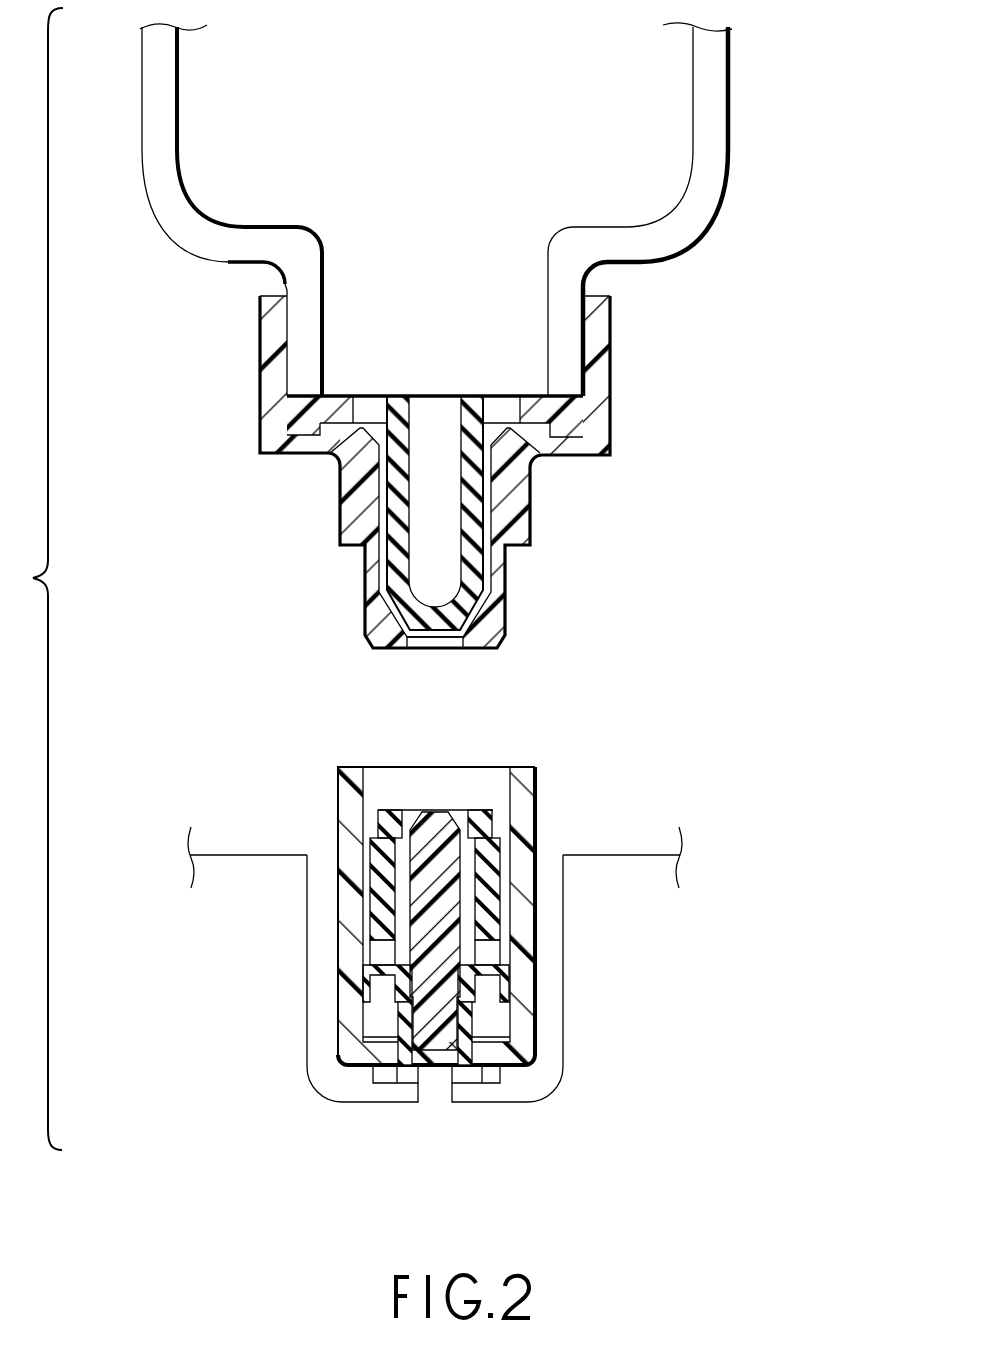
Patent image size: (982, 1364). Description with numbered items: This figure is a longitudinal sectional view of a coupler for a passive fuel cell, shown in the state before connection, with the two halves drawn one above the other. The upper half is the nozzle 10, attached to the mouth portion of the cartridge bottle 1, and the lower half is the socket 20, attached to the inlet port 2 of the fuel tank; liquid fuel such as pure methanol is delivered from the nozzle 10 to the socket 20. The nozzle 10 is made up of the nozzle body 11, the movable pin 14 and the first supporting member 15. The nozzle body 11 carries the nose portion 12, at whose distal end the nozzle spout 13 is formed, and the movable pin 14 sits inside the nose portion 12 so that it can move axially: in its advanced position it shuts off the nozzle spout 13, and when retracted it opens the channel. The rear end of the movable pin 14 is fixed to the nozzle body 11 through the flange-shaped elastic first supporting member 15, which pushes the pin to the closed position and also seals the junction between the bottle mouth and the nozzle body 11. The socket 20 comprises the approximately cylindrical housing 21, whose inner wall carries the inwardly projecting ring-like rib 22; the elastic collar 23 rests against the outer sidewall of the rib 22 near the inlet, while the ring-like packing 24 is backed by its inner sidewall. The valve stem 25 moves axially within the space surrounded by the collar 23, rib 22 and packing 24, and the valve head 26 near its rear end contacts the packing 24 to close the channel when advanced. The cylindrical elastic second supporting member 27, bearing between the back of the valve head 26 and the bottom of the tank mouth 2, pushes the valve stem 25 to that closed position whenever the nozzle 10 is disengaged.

The cartridge bottle 1 is at (718, 133).
The inlet port of fuel tank 2 is at (550, 1053).
The nozzle 10 is at (431, 505).
The nozzle body 11 is at (260, 322).
The nose portion 12 is at (350, 533).
The nozzle spout 13 is at (393, 652).
The movable pin 14 is at (400, 468).
The first supporting member 15 is at (340, 396).
The socket 20 is at (435, 938).
The housing 21 is at (350, 937).
The ring-like rib 22 is at (498, 955).
The collar 23 is at (368, 903).
The ring-like packing 24 is at (378, 975).
The valve stem 25 is at (418, 857).
The valve head 26 is at (372, 1012).
The second supporting member 27 is at (400, 1055).